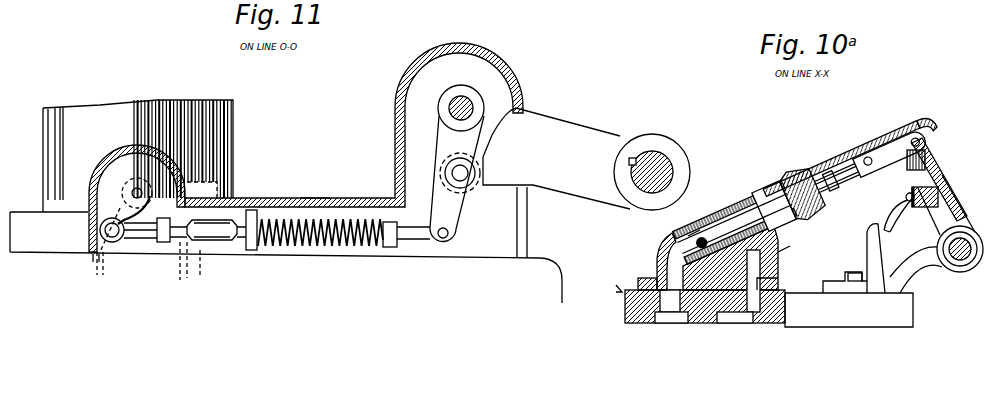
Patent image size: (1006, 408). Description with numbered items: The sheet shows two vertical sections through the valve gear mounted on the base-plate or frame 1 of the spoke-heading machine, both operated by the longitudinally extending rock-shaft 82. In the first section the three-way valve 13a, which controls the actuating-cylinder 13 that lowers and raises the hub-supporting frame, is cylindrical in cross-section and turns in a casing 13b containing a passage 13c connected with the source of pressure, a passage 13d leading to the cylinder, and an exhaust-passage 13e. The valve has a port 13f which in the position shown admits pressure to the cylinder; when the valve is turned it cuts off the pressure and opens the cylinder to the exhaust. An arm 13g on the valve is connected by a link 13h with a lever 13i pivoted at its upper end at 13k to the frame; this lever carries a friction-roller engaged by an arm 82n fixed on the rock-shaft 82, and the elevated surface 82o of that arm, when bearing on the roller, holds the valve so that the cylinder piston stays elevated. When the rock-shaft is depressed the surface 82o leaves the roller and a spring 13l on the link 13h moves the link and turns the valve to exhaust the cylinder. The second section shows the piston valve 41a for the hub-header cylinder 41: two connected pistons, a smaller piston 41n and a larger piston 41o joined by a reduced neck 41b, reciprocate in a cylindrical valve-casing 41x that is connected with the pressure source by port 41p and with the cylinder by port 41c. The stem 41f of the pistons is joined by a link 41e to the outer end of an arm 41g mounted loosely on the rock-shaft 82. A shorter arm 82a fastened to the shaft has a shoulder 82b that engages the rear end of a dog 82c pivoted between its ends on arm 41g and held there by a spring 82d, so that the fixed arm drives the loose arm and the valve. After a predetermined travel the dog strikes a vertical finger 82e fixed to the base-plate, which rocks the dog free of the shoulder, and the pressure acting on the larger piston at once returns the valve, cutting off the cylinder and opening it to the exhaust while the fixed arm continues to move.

In FIG. 11, the frame 1 is at (286, 245).
In FIG. 10A, the frame 1 is at (849, 310).
In FIG. 11, the cylinder 13 is at (120, 121).
In FIG. 11, the three-way valve 13a is at (312, 197).
In FIG. 11, the casing 13b is at (101, 166).
In FIG. 11, the passage 13c is at (203, 262).
In FIG. 11, the passage 13d is at (187, 262).
In FIG. 11, the exhaust-passage 13e is at (95, 254).
In FIG. 11, the port 13f is at (117, 204).
In FIG. 11, the arm 13g is at (103, 213).
In FIG. 11, the link 13h is at (243, 218).
In FIG. 11, the lever 13i is at (453, 209).
In FIG. 11, the pivot 13k is at (462, 97).
In FIG. 11, the spring 13l is at (333, 219).
In FIG. 11, the rock-shaft 82 is at (667, 158).
In FIG. 10A, the rock-shaft 82 is at (958, 263).
In FIG. 11, the arm 82n is at (556, 158).
In FIG. 11, the elevated surface 82o is at (483, 171).
In FIG. 10A, the cylinder 41 is at (673, 303).
In FIG. 10A, the valve 41a is at (787, 258).
In FIG. 10A, the reduced neck 41b is at (732, 218).
In FIG. 10A, the port 41c is at (660, 242).
In FIG. 10A, the link 41e is at (849, 156).
In FIG. 10A, the stem 41f is at (833, 169).
In FIG. 10A, the arm 41g is at (930, 157).
In FIG. 10A, the piston 41n is at (693, 238).
In FIG. 10A, the piston 41o is at (787, 196).
In FIG. 10A, the port 41p is at (743, 307).
In FIG. 10A, the valve-casing 41x is at (781, 243).
In FIG. 10A, the arm 82a is at (950, 210).
In FIG. 10A, the shoulder 82b is at (933, 190).
In FIG. 10A, the dog 82c is at (910, 197).
In FIG. 10A, the spring 82d is at (912, 160).
In FIG. 10A, the vertical finger 82e is at (875, 252).